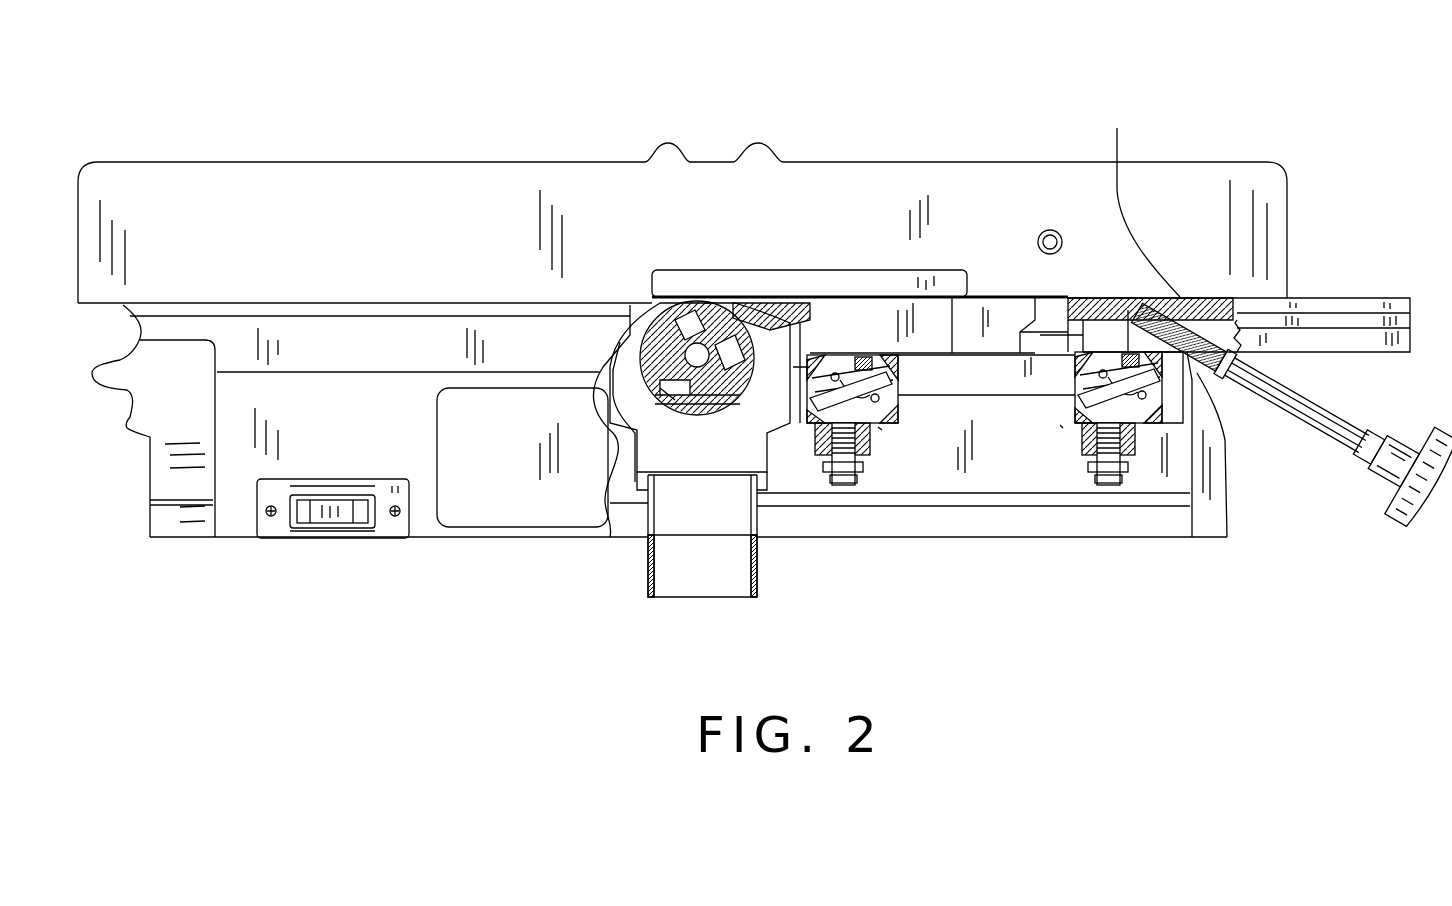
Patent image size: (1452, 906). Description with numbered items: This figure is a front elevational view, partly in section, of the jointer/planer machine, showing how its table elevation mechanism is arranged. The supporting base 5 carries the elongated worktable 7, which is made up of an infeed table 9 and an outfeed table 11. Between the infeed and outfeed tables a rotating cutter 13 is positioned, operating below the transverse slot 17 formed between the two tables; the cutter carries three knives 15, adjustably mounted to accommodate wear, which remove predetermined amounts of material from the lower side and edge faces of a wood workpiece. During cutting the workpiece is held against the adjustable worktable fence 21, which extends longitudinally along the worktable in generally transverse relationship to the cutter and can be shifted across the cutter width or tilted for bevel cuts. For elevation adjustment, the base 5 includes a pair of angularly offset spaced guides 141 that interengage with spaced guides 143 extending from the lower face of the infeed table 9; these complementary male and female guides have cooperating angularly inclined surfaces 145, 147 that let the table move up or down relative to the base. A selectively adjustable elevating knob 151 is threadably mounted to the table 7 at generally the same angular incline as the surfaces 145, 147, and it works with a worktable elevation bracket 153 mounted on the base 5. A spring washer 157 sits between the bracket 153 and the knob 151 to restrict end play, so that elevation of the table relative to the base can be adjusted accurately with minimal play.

The base 5 is at (168, 413).
The elongated worktable 7 is at (1410, 319).
The infeed table 9 is at (1345, 298).
The outfeed table 11 is at (193, 305).
The rotating cutter 13 is at (657, 320).
The knives 15 is at (693, 310).
The transverse slot 17 is at (712, 297).
The adjustable worktable fence 21 is at (1173, 198).
The spaced guides 141 is at (878, 427).
The spaced guides 143 is at (898, 370).
The angularly inclined surface 145 is at (882, 425).
The angularly inclined surface 147 is at (887, 405).
The selectively adjustable elevating knob 151 is at (1340, 450).
The worktable elevation bracket 153 is at (1213, 388).
The spring washer 157 is at (1140, 200).